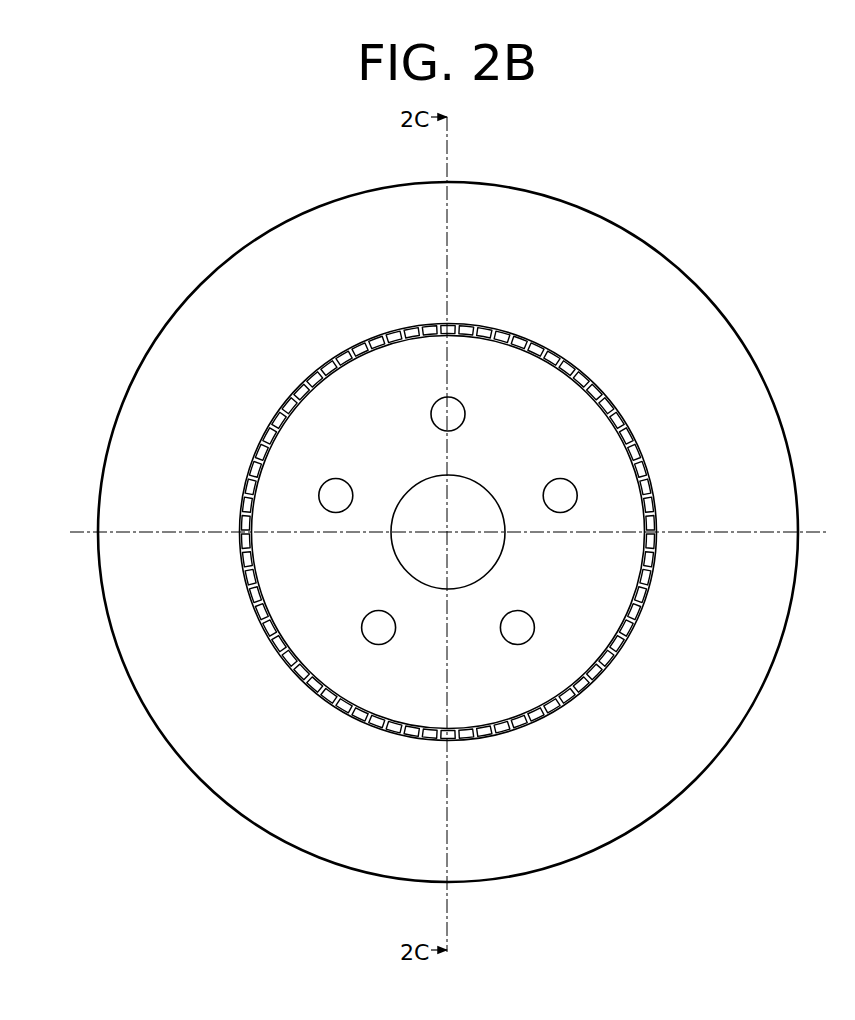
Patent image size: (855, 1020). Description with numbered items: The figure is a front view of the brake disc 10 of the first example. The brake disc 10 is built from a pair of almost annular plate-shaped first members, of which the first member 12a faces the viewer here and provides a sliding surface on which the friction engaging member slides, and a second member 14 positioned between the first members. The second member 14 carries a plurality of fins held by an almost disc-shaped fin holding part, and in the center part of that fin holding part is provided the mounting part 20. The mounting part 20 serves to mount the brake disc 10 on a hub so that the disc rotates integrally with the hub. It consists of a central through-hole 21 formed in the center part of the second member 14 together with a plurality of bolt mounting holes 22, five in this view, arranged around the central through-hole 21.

The brake disc 10 is at (607, 180).
The first member 12a is at (682, 302).
The second member 14 is at (317, 420).
The mounting part 20 is at (298, 508).
The central through-hole 21 is at (492, 494).
The bolt mounting holes 22 is at (568, 498).